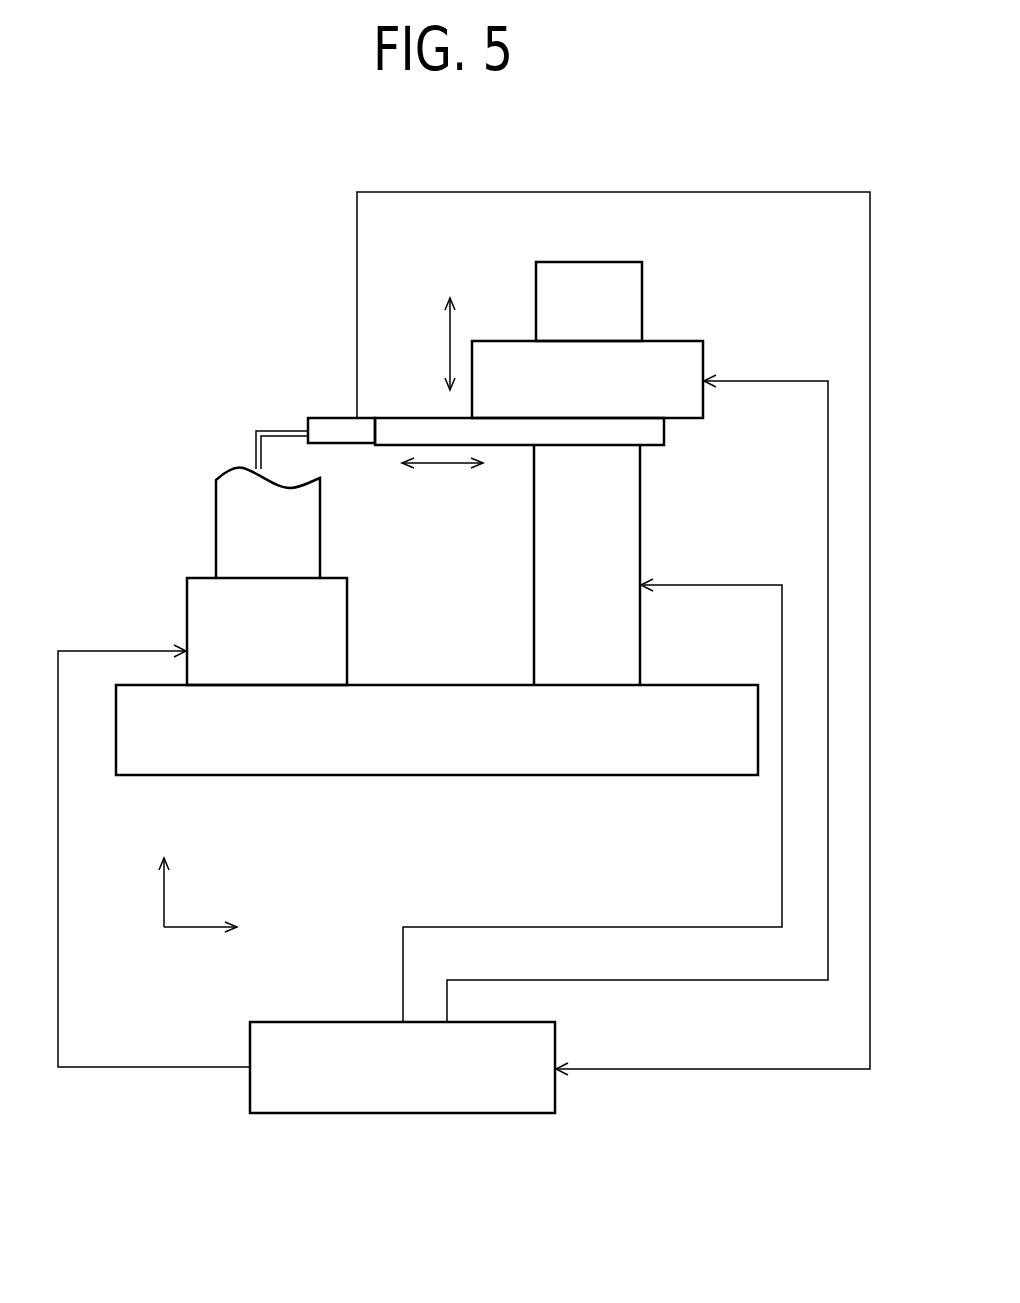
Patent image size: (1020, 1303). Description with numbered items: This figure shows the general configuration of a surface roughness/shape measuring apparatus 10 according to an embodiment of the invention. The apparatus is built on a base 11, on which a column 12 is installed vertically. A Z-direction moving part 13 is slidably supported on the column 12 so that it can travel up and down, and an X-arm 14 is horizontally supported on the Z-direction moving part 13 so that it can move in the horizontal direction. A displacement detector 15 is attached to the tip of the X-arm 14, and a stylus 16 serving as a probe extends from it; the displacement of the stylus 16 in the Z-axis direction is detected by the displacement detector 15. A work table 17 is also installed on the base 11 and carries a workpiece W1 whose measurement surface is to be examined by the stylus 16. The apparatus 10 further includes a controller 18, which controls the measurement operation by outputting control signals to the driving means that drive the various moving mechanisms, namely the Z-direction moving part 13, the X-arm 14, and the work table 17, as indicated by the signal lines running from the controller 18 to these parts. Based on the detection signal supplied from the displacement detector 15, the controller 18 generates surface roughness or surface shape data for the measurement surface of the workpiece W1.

The surface roughness/shape measuring apparatus 10 is at (199, 144).
The base 11 is at (430, 685).
The column 12 is at (643, 280).
The Z-direction moving part 13 is at (678, 341).
The X-arm 14 is at (510, 446).
The displacement detector 15 is at (327, 416).
The stylus 16 is at (258, 430).
The work table 17 is at (187, 608).
The controller 18 is at (355, 1114).
The workpiece W1 is at (215, 510).